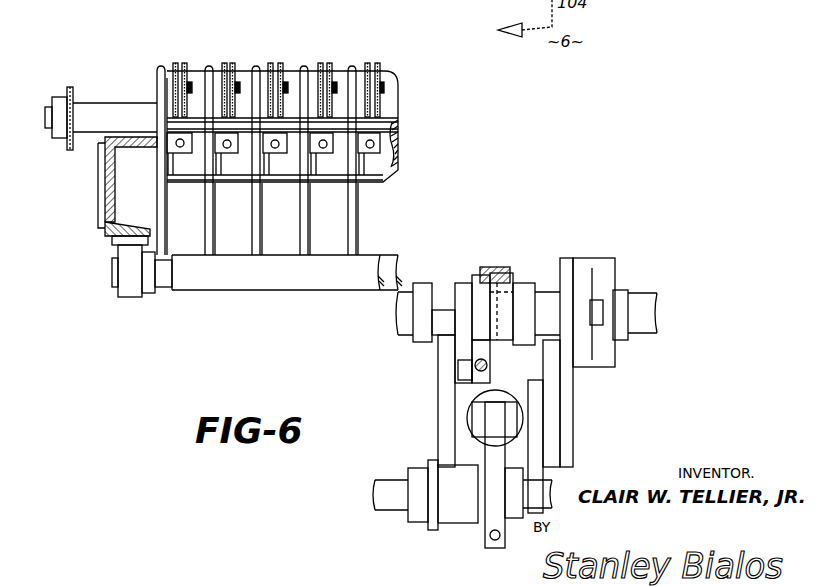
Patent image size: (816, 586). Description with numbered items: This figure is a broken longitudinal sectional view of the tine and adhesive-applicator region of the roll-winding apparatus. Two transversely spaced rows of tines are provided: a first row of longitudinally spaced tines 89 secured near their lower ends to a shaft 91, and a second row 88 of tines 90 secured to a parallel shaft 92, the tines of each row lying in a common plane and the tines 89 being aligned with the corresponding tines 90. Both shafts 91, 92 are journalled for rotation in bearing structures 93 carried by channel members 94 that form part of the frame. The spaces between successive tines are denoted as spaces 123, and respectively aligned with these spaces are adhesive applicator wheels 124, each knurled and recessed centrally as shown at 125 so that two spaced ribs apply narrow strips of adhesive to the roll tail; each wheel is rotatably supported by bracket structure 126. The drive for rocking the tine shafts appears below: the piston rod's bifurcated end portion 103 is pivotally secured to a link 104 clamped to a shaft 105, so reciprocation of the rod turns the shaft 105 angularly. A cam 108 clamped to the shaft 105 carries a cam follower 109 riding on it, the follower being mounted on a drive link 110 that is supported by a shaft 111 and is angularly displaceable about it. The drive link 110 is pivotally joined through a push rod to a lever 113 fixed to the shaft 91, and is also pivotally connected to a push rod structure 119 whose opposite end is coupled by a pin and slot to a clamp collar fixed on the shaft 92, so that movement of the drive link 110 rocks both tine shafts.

The second row of tines 88 is at (362, 229).
The tines 89 is at (356, 66).
The tines 90 is at (338, 212).
The shaft 91 is at (400, 259).
The shaft 92 is at (272, 277).
The bearing structures 93 is at (130, 298).
The channel members 94 is at (105, 224).
The bifurcated end portion 103 is at (513, 440).
The link 104 is at (488, 523).
The shaft 105 is at (392, 508).
The cam 108 is at (442, 400).
The cam follower 109 is at (444, 309).
The drive link 110 is at (460, 352).
The shaft 111 is at (548, 288).
The lever 113 is at (503, 268).
The push rod structure 119 is at (470, 365).
The spaces 123 is at (190, 247).
The adhesive applicator wheels 124 is at (268, 64).
The central recess 125 is at (187, 63).
The bracket structure 126 is at (357, 111).